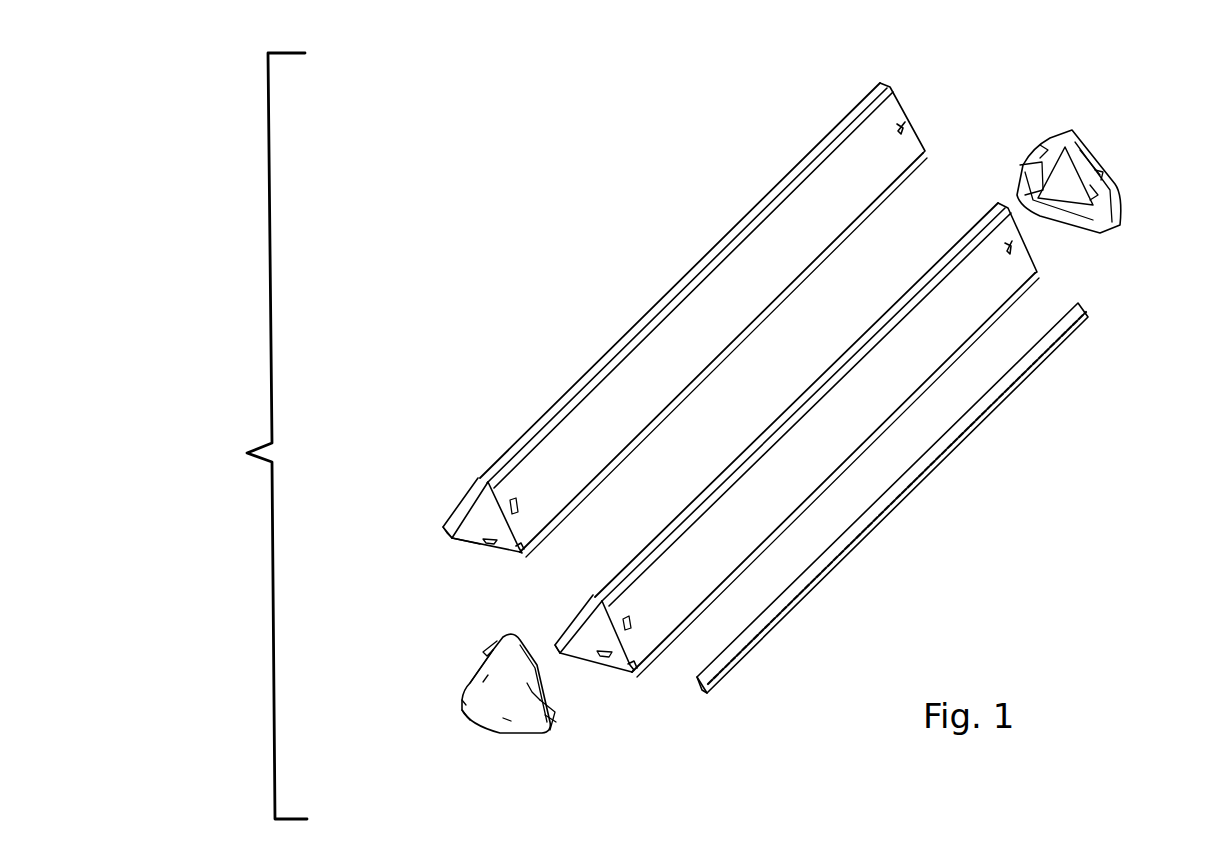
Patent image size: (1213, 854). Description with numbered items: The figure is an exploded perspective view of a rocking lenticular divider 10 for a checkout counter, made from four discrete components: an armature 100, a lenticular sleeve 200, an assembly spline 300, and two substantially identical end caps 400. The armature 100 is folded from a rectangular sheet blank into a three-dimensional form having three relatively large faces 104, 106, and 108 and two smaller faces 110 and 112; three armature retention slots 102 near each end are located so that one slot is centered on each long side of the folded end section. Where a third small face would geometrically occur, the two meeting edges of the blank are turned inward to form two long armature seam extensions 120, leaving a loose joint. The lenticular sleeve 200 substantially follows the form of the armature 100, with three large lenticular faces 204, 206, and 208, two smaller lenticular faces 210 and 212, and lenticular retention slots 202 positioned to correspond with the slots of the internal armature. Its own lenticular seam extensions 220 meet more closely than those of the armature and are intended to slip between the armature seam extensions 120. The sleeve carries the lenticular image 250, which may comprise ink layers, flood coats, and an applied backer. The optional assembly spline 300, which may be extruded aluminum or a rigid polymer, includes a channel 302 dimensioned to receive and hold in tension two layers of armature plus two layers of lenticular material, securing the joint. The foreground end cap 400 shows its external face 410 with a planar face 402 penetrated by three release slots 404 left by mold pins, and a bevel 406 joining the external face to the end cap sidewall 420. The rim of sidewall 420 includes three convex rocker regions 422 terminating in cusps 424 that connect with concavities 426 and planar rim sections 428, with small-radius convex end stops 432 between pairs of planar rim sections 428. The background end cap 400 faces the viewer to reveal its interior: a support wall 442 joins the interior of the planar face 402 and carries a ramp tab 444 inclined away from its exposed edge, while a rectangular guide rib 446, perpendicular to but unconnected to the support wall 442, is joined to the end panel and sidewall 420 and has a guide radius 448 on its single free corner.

The rocking lenticular divider 10 is at (260, 436).
The armature 100 is at (808, 441).
The armature retention slots 102 is at (1015, 249).
The armature face 104 is at (927, 372).
The armature face 106 is at (583, 602).
The armature face 108 is at (573, 650).
The smaller armature face 110 is at (663, 529).
The smaller armature face 112 is at (555, 646).
The armature seam extensions 120 is at (635, 657).
The lenticular sleeve 200 is at (675, 323).
The lenticular retention slots 202 is at (908, 123).
The lenticular face 204 is at (787, 283).
The lenticular face 206 is at (465, 498).
The lenticular face 208 is at (498, 558).
The smaller lenticular face 210 is at (564, 397).
The smaller lenticular face 212 is at (444, 535).
The lenticular seam extensions 220 is at (525, 546).
The lenticular image 250 is at (452, 544).
The assembly spline 300 is at (892, 505).
The channel 302 is at (702, 692).
The end cap 400 is at (1078, 193).
The planar face 402 is at (524, 736).
The release slots 404 is at (537, 692).
The bevel 406 is at (460, 710).
The external face 410 is at (506, 726).
The end cap sidewall 420 is at (552, 716).
The convex rocker regions 422 is at (477, 664).
The cusps 424 is at (465, 688).
The concavities 426 is at (497, 644).
The planar rim sections 428 is at (460, 700).
The convex end stops 432 is at (555, 736).
The support wall 442 is at (1100, 158).
The ramp tab 444 is at (1097, 192).
The guide rib 446 is at (1038, 154).
The guide radius 448 is at (1030, 168).